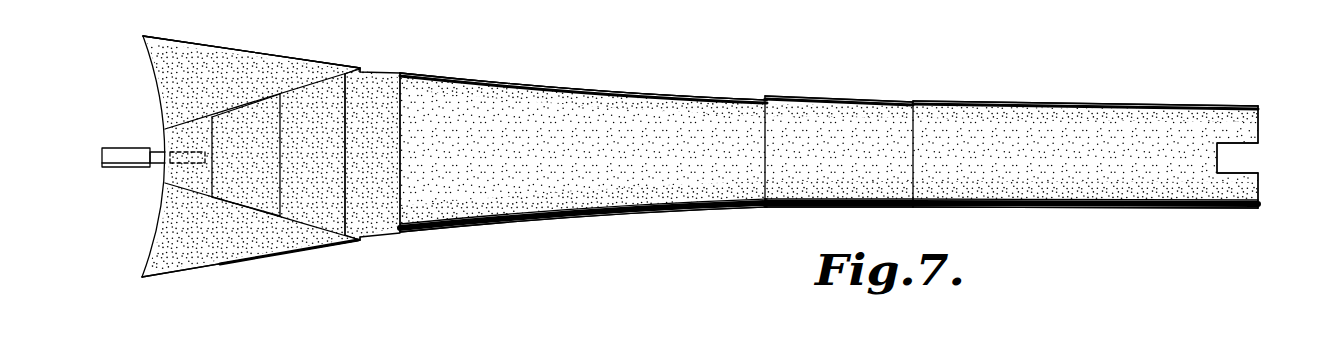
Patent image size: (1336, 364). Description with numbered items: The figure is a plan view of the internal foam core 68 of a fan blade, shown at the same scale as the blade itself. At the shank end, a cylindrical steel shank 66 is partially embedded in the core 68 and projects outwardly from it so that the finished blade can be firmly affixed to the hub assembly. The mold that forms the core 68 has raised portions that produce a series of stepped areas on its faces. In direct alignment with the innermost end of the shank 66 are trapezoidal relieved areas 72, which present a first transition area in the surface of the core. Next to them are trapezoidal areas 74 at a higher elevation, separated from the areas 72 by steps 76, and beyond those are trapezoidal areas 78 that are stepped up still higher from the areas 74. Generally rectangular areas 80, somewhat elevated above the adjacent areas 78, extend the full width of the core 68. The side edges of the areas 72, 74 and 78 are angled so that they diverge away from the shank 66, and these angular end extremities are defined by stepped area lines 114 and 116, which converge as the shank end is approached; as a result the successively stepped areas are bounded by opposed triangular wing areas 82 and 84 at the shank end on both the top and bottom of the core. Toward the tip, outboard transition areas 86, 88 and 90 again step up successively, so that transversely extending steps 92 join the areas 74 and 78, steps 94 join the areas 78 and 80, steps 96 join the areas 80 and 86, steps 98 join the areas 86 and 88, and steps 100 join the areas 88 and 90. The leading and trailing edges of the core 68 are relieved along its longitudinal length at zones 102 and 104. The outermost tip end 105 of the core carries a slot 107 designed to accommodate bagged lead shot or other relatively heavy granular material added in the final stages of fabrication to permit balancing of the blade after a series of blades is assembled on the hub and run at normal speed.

The steel shank 66 is at (120, 153).
The foam core 68 is at (508, 81).
The trapezoidal relieved areas 72 is at (193, 133).
The trapezoidal areas 74 is at (240, 85).
The steps 76 is at (213, 153).
The trapezoidal areas 78 is at (298, 210).
The rectangular areas 80 is at (380, 85).
The triangular wing area 82 is at (205, 52).
The triangular wing area 84 is at (208, 270).
The outboard transition area 86 is at (610, 100).
The outboard transition area 88 is at (855, 105).
The outboard transition area 90 is at (982, 105).
The steps 92 is at (280, 152).
The steps 94 is at (347, 152).
The steps 96 is at (402, 148).
The steps 98 is at (765, 152).
The steps 100 is at (927, 150).
The relieved zone 102 is at (260, 253).
The relieved zone 104 is at (285, 53).
The tip end 105 is at (1237, 120).
The slot 107 is at (1240, 147).
The stepped area line 114 is at (327, 77).
The stepped area line 116 is at (325, 240).